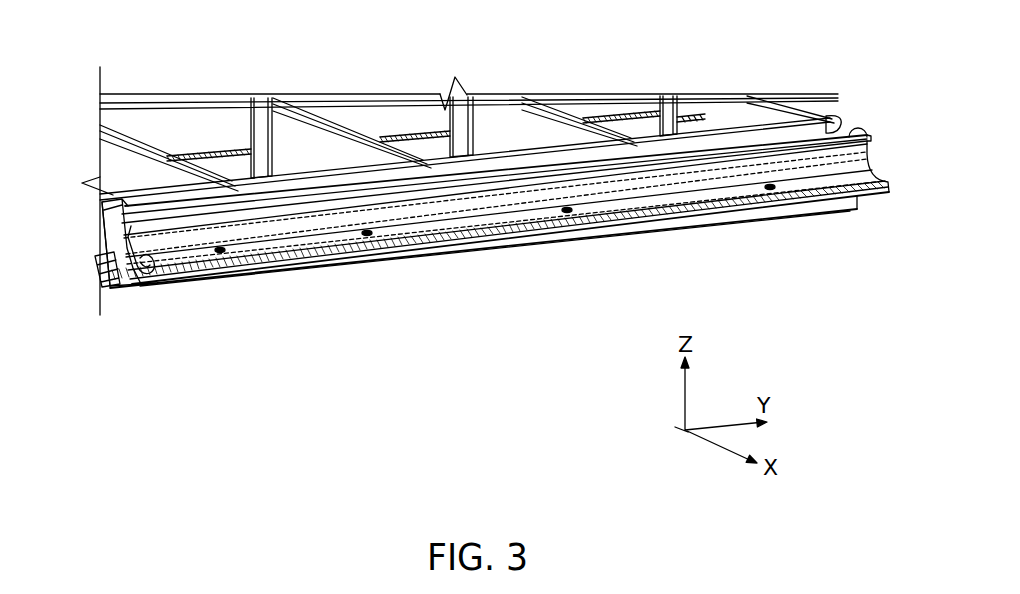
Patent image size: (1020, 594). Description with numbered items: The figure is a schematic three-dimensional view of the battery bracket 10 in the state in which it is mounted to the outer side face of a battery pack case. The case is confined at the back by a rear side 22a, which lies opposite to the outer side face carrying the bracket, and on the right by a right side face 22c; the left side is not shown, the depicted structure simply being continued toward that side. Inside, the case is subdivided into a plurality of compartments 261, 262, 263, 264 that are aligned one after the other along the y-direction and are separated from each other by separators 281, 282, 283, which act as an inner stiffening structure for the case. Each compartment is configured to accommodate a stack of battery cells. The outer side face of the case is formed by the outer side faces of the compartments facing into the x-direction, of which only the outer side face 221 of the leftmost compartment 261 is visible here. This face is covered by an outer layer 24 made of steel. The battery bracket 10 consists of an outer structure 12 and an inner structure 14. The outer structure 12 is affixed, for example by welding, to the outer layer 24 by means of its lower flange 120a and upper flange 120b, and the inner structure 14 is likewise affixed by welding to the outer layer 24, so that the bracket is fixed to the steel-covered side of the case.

The battery bracket 10 is at (578, 267).
The outer structure 12 is at (866, 147).
The inner structure 14 is at (133, 280).
The rear side 22a is at (147, 100).
The right side face 22c is at (830, 93).
The outer layer 24 is at (818, 130).
The lower flange 120a is at (730, 221).
The upper flange 120b is at (857, 126).
The outer side face of the leftmost compartment 221 is at (100, 280).
The compartment 261 is at (120, 222).
The compartment 262 is at (207, 129).
The compartment 263 is at (375, 110).
The compartment 264 is at (622, 124).
The separator 281 is at (117, 150).
The separator 282 is at (293, 127).
The separator 283 is at (520, 117).